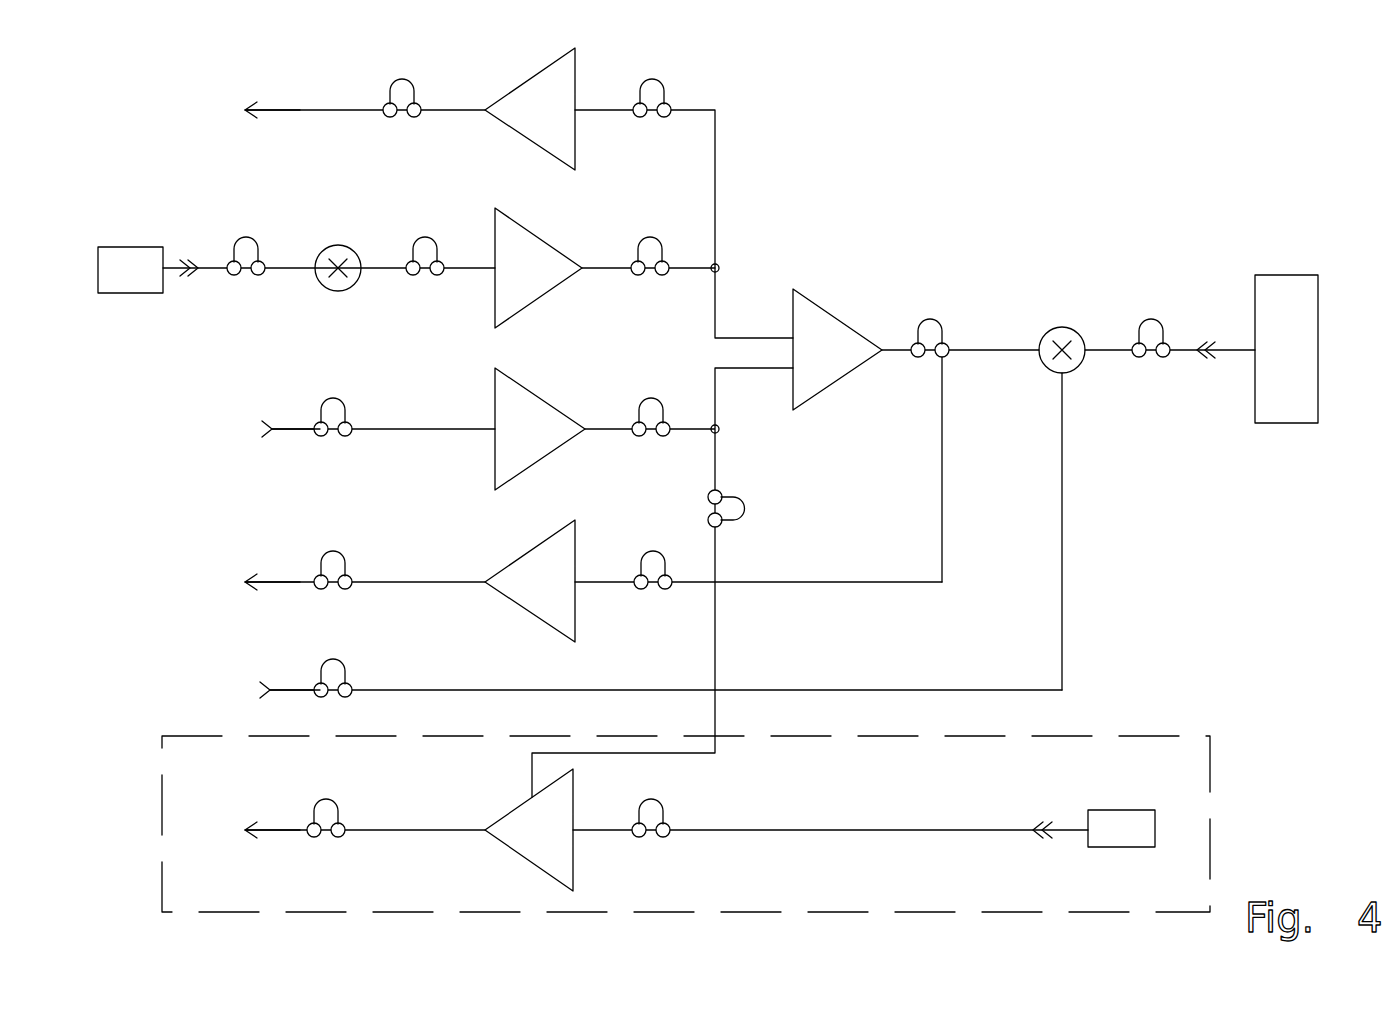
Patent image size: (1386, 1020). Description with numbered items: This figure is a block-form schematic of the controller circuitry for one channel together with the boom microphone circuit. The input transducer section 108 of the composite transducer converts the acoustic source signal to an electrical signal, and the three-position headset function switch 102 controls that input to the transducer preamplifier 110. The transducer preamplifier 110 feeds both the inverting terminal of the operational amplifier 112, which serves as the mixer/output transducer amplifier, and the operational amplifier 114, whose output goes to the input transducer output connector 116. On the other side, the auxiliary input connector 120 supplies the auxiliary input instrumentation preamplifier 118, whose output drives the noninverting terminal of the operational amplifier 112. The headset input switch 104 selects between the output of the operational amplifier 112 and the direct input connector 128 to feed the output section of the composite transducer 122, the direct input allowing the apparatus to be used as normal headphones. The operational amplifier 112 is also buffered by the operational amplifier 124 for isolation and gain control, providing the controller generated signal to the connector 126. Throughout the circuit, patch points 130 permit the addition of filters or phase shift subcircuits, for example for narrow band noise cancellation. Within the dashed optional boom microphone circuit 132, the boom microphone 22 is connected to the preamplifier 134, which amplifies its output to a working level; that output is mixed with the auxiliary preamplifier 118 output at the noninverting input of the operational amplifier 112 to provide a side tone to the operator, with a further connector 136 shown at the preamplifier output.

The boom microphone 22 is at (1148, 810).
The headset function switch 102 is at (355, 285).
The headset input switch 104 is at (1080, 334).
The input transducer section 108 is at (115, 247).
The transducer preamplifier 110 is at (563, 256).
The operational amplifier 112 is at (860, 330).
The operational amplifier 114 is at (541, 72).
The input transducer output connector 116 is at (256, 116).
The auxiliary input instrumentation preamplifier 118 is at (566, 416).
The auxiliary input connector 120 is at (266, 420).
The output section of the composite transducer 122 is at (1318, 372).
The buffer operational amplifier 124 is at (576, 550).
The output connector 126 is at (256, 574).
The input connector 128 is at (262, 700).
The patch points 130 is at (386, 116).
The optional boom microphone circuit 132 is at (1210, 792).
The preamplifier 134 is at (519, 805).
The output signal 136 is at (255, 818).